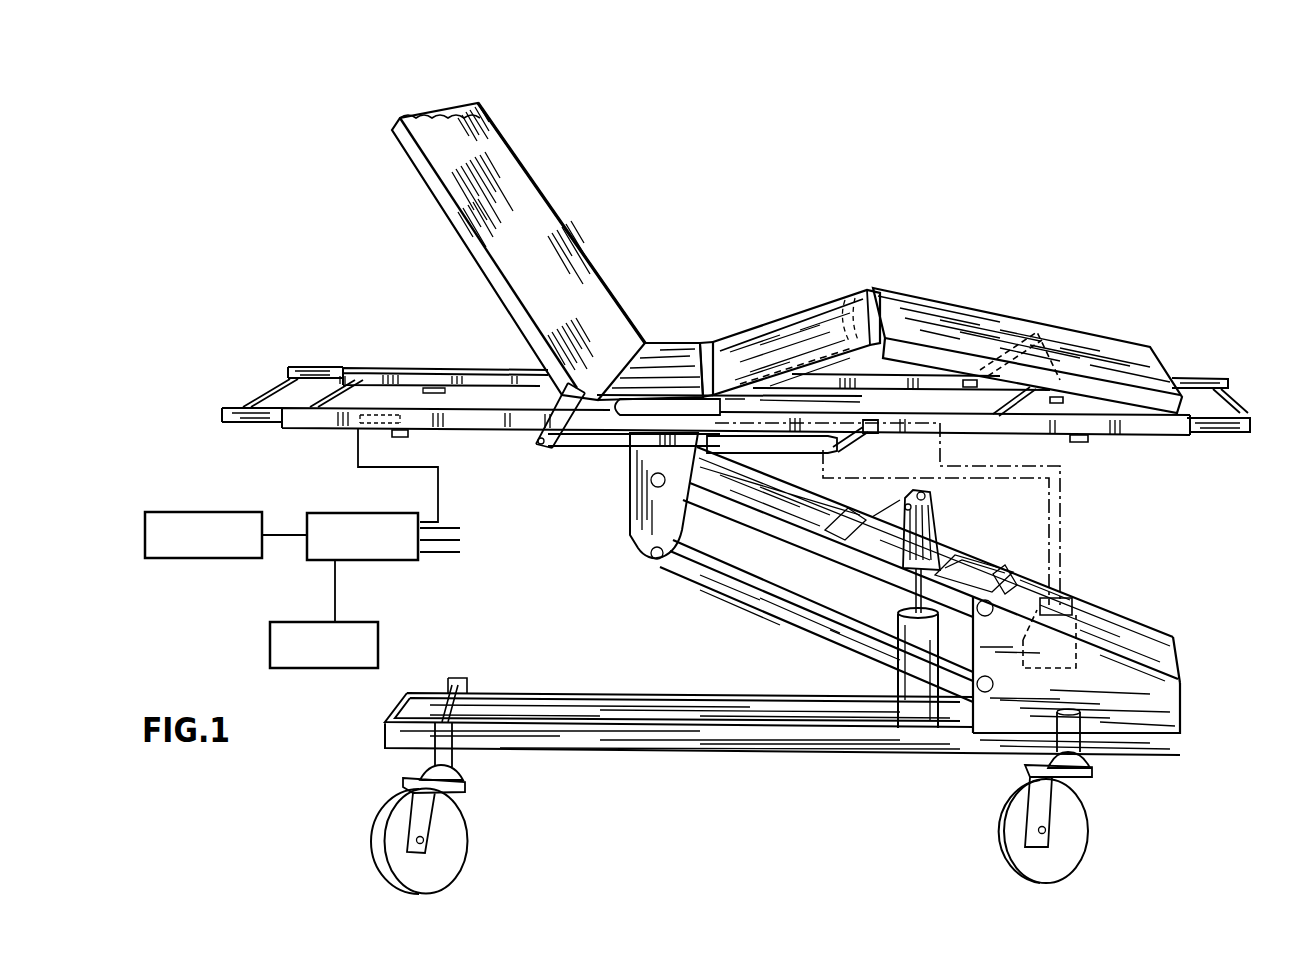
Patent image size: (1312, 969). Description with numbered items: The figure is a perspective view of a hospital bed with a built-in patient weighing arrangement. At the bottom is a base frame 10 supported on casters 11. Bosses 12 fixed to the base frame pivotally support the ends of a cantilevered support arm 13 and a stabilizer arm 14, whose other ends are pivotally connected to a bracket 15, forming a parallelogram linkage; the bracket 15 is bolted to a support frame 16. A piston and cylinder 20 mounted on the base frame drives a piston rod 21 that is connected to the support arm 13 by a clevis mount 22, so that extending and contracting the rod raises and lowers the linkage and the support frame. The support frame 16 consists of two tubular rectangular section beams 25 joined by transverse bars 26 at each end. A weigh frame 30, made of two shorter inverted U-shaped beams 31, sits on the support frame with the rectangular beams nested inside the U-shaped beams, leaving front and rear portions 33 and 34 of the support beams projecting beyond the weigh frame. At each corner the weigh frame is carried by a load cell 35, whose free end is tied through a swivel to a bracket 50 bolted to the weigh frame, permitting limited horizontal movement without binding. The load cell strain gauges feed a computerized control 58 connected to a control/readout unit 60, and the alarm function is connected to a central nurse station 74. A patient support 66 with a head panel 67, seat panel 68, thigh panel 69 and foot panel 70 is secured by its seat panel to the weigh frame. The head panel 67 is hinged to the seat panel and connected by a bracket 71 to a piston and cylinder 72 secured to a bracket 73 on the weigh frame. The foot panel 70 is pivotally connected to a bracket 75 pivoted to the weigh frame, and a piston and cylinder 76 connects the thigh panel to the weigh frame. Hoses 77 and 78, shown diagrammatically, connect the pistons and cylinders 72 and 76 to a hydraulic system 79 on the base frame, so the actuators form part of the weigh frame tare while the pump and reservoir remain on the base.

The base frame 10 is at (775, 752).
The casters 11 is at (465, 838).
The bosses 12 is at (1143, 680).
The cantilevered support arm 13 is at (848, 517).
The stabilizer arm 14 is at (800, 617).
The bracket 15 is at (652, 522).
The support frame 16 is at (303, 367).
The piston and cylinder 20 is at (917, 612).
The piston rod 21 is at (893, 568).
The clevis mount 22 is at (935, 500).
The tubular rectangular section beams 25 is at (288, 371).
The transverse bars 26 is at (255, 397).
The weigh frame 30 is at (490, 367).
The inverted U-shaped beams 31 is at (400, 407).
The front portion of the support beam 33 is at (1220, 440).
The rear portion of the support beam 34 is at (253, 433).
The load cell 35 is at (375, 433).
The bracket 50 is at (410, 434).
The computerized control 58 is at (370, 560).
The control/readout unit 60 is at (200, 560).
The patient support 66 is at (596, 233).
The head panel 67 is at (522, 200).
The seat panel 68 is at (668, 348).
The thigh panel 69 is at (788, 320).
The foot panel 70 is at (977, 320).
The bracket 71 is at (542, 420).
The piston and cylinder 72 is at (800, 443).
The bracket 73 is at (848, 440).
The central nurse station 74 is at (270, 648).
The bracket 75 is at (1019, 405).
The piston and cylinder 76 is at (788, 397).
The hose 77 is at (1048, 510).
The hose 78 is at (1062, 500).
The hydraulic system 79 is at (1065, 612).